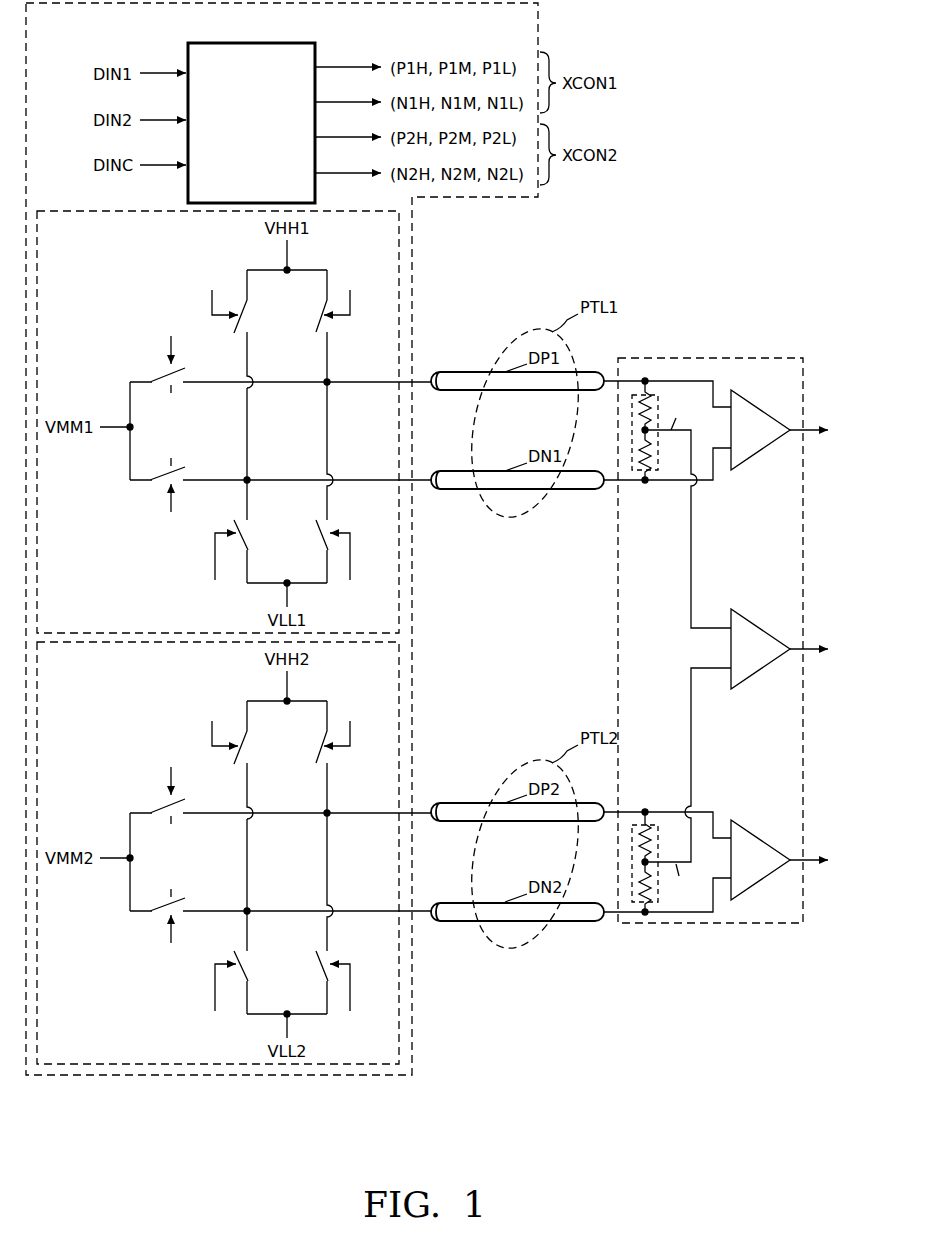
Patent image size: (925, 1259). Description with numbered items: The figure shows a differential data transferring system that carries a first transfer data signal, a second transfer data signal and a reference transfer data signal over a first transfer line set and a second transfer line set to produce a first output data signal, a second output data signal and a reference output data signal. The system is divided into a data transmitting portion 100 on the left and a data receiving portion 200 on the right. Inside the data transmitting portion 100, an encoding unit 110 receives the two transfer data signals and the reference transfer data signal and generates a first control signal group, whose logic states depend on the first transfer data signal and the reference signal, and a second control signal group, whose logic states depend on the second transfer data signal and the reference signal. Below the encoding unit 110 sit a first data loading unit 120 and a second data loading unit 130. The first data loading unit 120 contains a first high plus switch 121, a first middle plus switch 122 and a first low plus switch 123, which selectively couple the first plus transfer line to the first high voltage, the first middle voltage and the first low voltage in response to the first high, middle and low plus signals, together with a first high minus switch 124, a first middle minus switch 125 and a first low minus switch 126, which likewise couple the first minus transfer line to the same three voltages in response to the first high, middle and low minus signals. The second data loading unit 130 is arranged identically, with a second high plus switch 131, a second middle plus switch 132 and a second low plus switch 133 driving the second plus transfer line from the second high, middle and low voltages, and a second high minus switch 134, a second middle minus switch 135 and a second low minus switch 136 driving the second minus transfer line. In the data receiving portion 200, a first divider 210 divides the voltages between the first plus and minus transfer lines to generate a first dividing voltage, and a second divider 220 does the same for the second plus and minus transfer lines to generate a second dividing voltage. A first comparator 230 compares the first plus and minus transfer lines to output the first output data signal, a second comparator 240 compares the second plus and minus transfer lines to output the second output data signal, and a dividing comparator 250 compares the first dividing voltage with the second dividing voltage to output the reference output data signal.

The data transmitting portion 100 is at (538, 10).
The encoding unit 110 is at (268, 43).
The first data loading unit 120 is at (399, 243).
The first high plus switch 121 is at (318, 316).
The first middle plus switch 122 is at (280, 366).
The first low plus switch 123 is at (332, 527).
The first high minus switch 124 is at (249, 316).
The first middle minus switch 125 is at (280, 484).
The first low minus switch 126 is at (249, 536).
The second data loading unit 130 is at (250, 853).
The second high plus switch 131 is at (317, 757).
The second middle plus switch 132 is at (280, 797).
The second low plus switch 133 is at (353, 990).
The second high minus switch 134 is at (240, 760).
The second middle minus switch 135 is at (280, 915).
The second low minus switch 136 is at (246, 995).
The data receiving portion 200 is at (677, 358).
The first divider 210 is at (658, 452).
The second divider 220 is at (660, 838).
The first comparator 230 is at (750, 395).
The second comparator 240 is at (750, 826).
The dividing comparator 250 is at (750, 614).